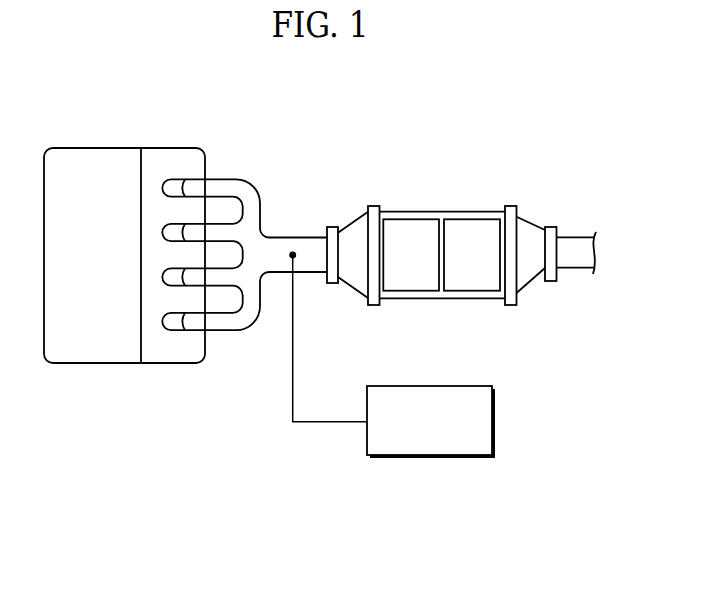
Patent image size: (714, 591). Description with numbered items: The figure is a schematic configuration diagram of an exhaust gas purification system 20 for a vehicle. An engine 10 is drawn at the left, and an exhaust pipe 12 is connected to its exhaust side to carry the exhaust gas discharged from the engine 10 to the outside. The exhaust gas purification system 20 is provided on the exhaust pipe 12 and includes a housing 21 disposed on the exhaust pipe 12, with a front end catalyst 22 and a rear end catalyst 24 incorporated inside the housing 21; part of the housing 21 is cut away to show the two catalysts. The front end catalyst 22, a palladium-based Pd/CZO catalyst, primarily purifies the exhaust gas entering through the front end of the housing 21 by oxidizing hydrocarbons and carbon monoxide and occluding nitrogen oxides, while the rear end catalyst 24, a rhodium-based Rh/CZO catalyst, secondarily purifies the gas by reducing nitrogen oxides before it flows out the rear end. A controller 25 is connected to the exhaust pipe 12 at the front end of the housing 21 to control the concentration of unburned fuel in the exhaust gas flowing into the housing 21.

The engine 10 is at (89, 147).
The exhaust pipe 12 is at (293, 232).
The exhaust gas purification system 20 is at (461, 229).
The housing 21 is at (357, 221).
The front end catalyst 22 is at (411, 218).
The rear end catalyst 24 is at (472, 218).
The controller 25 is at (428, 458).